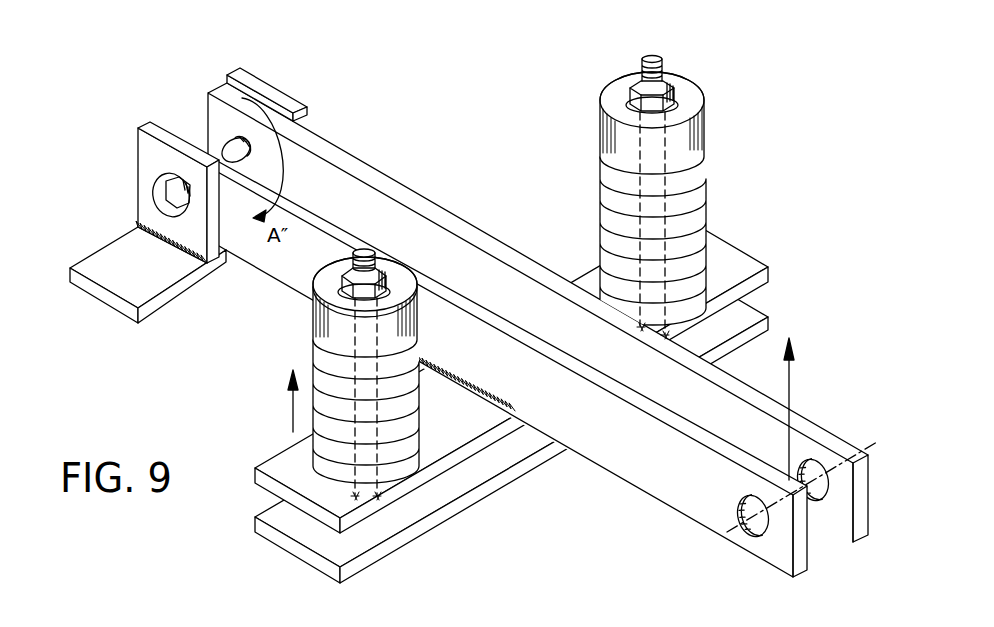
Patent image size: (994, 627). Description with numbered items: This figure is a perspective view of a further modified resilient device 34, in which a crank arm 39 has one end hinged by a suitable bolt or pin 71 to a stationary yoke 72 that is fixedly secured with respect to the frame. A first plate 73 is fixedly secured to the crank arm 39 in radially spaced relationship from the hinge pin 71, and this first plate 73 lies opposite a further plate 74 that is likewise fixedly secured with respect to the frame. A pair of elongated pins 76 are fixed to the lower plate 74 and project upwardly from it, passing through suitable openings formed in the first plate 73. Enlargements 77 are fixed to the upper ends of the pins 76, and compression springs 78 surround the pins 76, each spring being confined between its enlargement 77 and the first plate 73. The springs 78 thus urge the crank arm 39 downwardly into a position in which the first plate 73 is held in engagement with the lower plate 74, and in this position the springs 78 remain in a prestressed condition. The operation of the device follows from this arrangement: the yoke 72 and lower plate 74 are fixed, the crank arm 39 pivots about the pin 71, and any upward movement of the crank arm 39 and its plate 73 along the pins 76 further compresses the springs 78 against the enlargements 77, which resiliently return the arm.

The resilient device 34 is at (497, 135).
The crank arm 39 is at (407, 197).
The bolt or pin 71 is at (230, 150).
The stationary yoke 72 is at (155, 159).
The first plate 73 is at (467, 432).
The further plate 74 is at (417, 503).
The elongated pins 76 is at (352, 438).
The enlargements 77 is at (340, 328).
The compression springs 78 is at (325, 368).